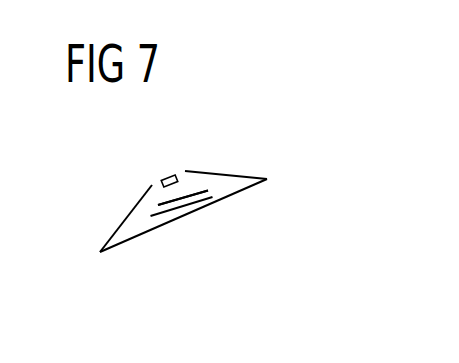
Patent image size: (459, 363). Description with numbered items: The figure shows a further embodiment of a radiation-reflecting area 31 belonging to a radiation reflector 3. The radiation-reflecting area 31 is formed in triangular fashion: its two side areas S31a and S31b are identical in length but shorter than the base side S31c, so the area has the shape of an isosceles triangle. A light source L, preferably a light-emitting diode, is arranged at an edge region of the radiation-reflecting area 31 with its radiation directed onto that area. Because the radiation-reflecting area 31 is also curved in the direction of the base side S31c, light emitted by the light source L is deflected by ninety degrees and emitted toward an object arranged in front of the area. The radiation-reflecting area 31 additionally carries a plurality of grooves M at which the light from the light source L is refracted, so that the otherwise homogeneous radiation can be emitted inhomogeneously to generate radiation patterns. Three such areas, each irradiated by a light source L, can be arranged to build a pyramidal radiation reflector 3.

The radiation reflector 3 is at (210, 186).
The radiation-reflecting area 31 is at (185, 205).
The side area S31a is at (227, 172).
The side area S31b is at (127, 215).
The base side S31c is at (228, 196).
The light source L is at (175, 178).
The grooves M is at (165, 210).